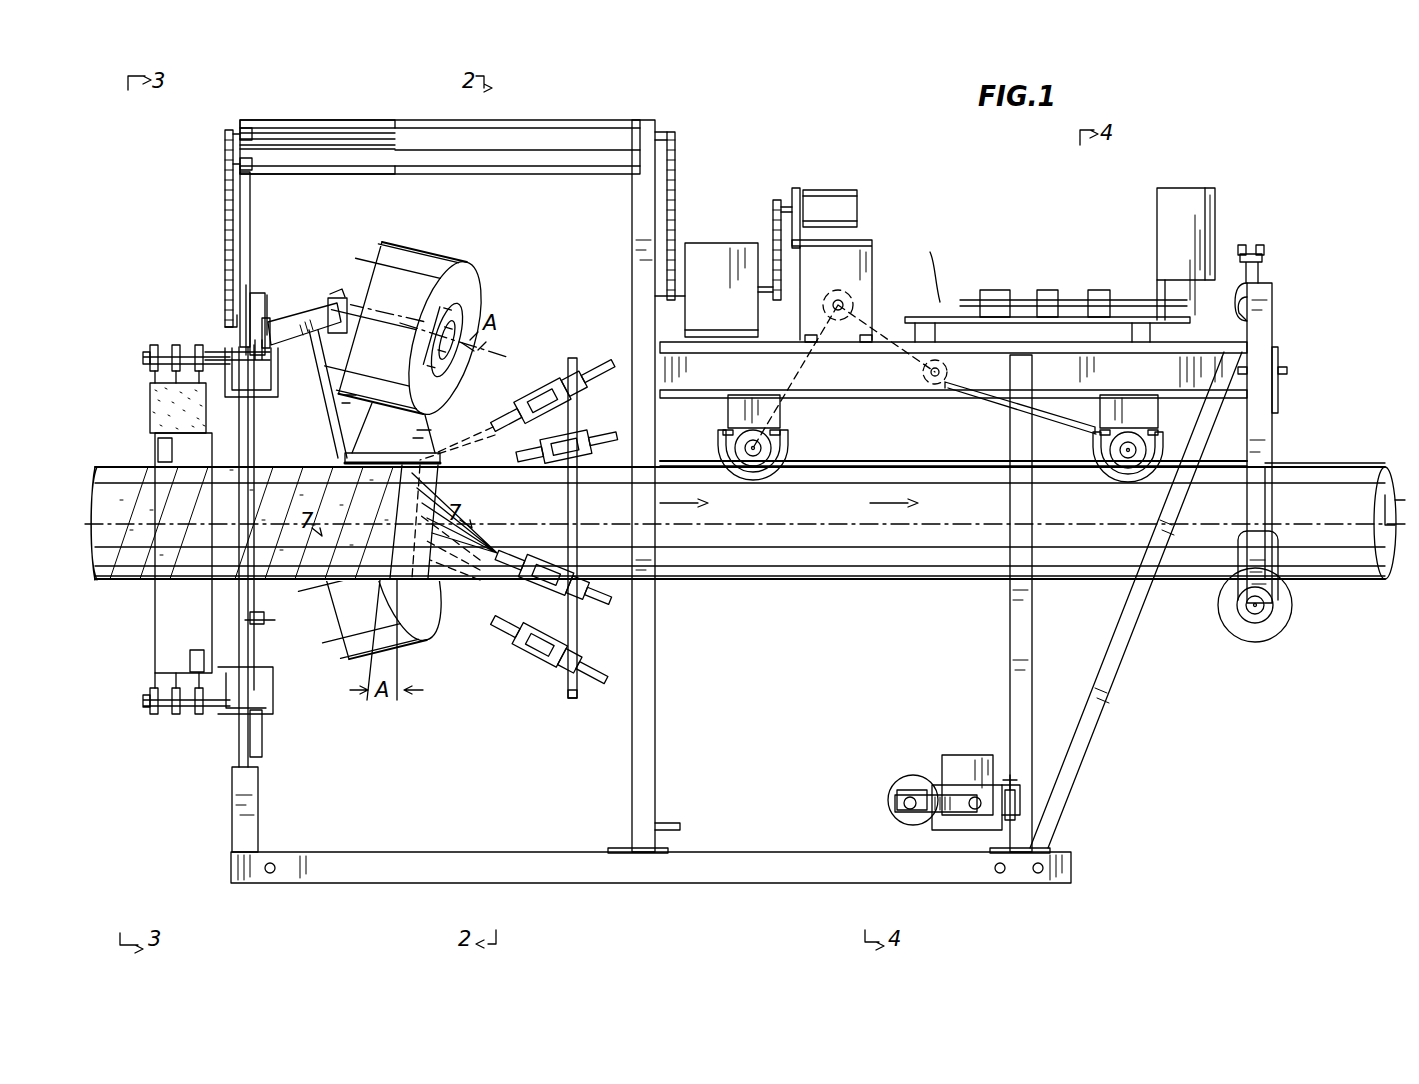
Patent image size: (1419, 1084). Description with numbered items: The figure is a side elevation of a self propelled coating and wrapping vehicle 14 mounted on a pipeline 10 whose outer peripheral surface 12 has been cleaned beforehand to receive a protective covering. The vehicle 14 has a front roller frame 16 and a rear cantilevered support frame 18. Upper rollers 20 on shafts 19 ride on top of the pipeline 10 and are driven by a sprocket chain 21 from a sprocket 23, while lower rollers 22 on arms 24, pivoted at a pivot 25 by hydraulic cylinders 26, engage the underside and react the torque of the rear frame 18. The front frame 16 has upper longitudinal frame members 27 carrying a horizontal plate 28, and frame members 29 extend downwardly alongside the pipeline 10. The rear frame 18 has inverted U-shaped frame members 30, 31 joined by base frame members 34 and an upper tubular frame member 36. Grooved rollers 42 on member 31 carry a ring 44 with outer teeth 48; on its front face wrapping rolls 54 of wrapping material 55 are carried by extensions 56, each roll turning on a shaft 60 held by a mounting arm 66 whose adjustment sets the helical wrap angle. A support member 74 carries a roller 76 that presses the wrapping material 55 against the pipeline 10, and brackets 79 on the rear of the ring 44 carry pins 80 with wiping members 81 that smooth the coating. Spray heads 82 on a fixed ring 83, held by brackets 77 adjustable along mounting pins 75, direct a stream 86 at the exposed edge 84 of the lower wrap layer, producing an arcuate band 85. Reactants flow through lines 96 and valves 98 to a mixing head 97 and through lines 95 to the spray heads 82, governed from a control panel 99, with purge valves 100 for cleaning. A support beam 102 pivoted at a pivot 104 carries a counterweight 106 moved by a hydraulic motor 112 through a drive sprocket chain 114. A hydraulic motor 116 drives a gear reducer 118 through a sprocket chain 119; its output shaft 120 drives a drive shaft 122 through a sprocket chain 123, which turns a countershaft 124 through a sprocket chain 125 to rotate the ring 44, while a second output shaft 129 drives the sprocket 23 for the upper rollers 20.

The pipeline 10 is at (1330, 480).
The outer peripheral surface 12 is at (1288, 480).
The self propelled coating and wrapping vehicle 14 is at (742, 130).
The front roller frame 16 is at (997, 240).
The rear cantilevered support frame 18 is at (545, 120).
The shafts 19 is at (770, 448).
The upper rollers 20 is at (770, 480).
The sprocket chain 21 is at (1005, 395).
The lower rollers 22 is at (1278, 625).
The sprocket 23 is at (842, 298).
The arms 24 is at (1275, 423).
The pivot 25 is at (1288, 370).
The hydraulic cylinders 26 is at (1256, 303).
The upper longitudinally extending frame members 27 is at (1180, 348).
The horizontal plate 28 is at (955, 335).
The frame members 29 is at (1097, 631).
The inverted U-shaped frame member 30 is at (632, 241).
The inverted U-shaped frame member 31 is at (250, 233).
The base frame members 34 is at (330, 885).
The tubular frame member 36 is at (496, 158).
The grooved rollers 42 is at (266, 368).
The ring 44 is at (241, 450).
The outer teeth 48 is at (250, 295).
The wrapping rolls 54 is at (410, 262).
The wrapping material 55 is at (470, 408).
The extension 56 is at (285, 315).
The shaft 60 is at (460, 315).
The mounting arm 66 is at (338, 292).
The support member 74 is at (330, 428).
The mounting pins 75 is at (535, 408).
The roller 76 is at (383, 452).
The mounting brackets 77 is at (575, 405).
The brackets 79 is at (273, 395).
The mounting pins 80 is at (175, 345).
The wiping and smoothing members 81 is at (150, 405).
The spray heads 82 is at (548, 390).
The ring 83 is at (580, 503).
The exposed edge 84 is at (455, 493).
The arcuate band 85 is at (400, 515).
The stream 86 is at (490, 545).
The lines 95 is at (598, 712).
The lines 96 is at (1129, 300).
The mixing head 97 is at (981, 290).
The valves 98 is at (1098, 290).
The control panel 99 is at (1198, 183).
The purge valves 100 is at (1048, 290).
The support beam 102 is at (975, 830).
The pivot 104 is at (1025, 785).
The counterweight 106 is at (960, 755).
The hydraulic motor 112 is at (887, 797).
The drive sprocket chain 114 is at (905, 811).
The hydraulic motor 116 is at (852, 195).
The gear reducer 118 is at (720, 243).
The sprocket chain 119 is at (778, 205).
The output shaft 120 is at (665, 299).
The drive shaft 122 is at (350, 153).
The sprocket chain 123 is at (674, 170).
The countershaft 124 is at (230, 300).
The sprocket chain 125 is at (222, 167).
The output shaft 129 is at (760, 378).